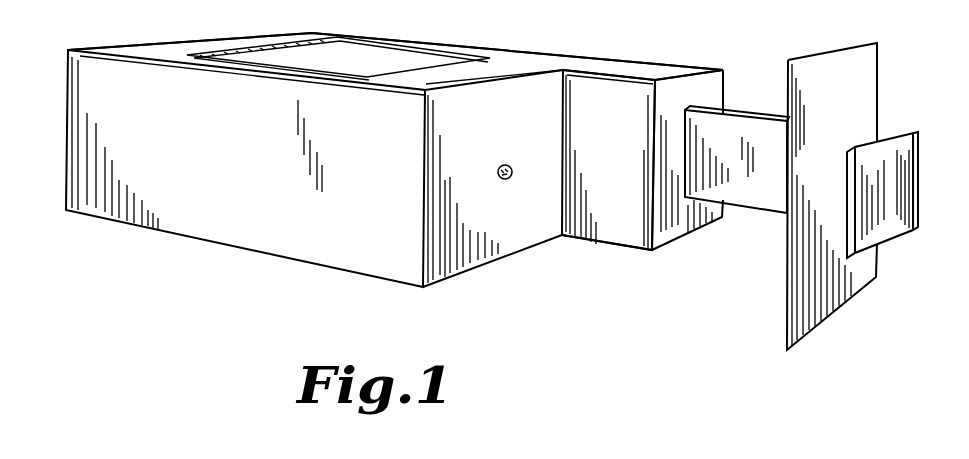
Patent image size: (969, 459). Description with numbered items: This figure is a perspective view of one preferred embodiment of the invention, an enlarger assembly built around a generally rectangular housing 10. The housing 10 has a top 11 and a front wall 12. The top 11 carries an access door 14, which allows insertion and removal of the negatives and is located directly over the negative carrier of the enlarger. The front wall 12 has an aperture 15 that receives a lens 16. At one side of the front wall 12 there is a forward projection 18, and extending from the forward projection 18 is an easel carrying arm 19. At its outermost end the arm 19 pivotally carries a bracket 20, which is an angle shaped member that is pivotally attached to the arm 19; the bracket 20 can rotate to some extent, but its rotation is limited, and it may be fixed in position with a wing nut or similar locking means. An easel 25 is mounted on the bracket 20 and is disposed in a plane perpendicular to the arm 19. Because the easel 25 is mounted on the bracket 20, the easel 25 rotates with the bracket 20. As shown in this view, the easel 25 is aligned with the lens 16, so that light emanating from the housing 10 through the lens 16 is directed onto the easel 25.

The housing 10 is at (67, 133).
The top 11 is at (508, 58).
The front wall 12 is at (467, 256).
The access door 14 is at (365, 55).
The aperture 15 is at (503, 165).
The lens 16 is at (512, 173).
The forward projection 18 is at (645, 64).
The easel carrying arm 19 is at (728, 112).
The bracket 20 is at (887, 202).
The easel 25 is at (868, 74).